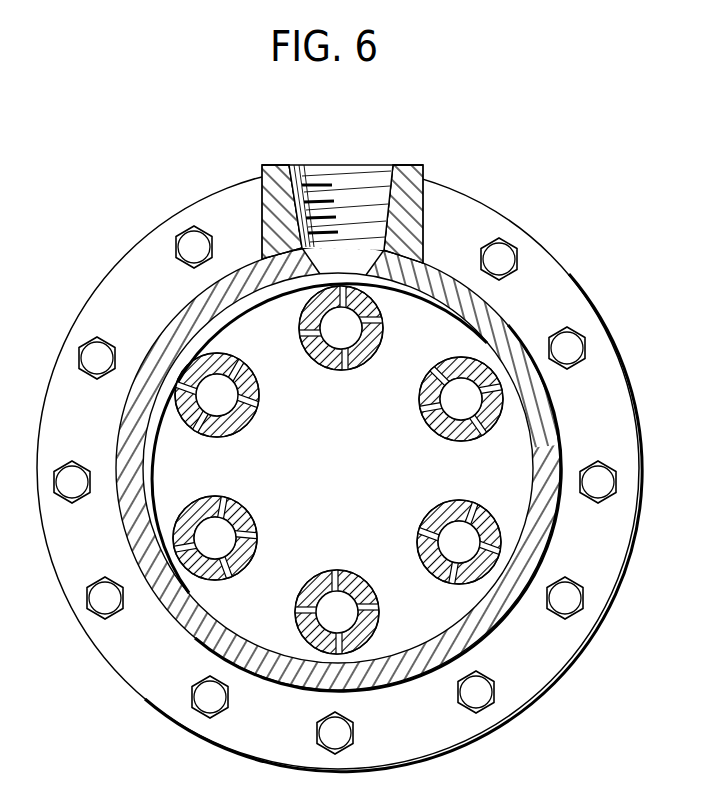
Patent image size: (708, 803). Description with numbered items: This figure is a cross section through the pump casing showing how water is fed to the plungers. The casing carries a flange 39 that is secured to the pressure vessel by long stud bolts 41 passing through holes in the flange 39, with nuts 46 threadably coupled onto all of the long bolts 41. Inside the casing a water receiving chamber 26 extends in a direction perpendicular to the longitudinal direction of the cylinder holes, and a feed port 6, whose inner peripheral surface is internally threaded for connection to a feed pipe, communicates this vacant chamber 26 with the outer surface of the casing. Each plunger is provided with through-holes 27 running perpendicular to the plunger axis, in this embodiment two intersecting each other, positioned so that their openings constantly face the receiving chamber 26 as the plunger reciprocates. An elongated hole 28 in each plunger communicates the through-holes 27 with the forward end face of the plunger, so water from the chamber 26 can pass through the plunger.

The feed port 6 is at (382, 164).
The water receiving chamber 26 is at (340, 498).
The through-hole 27 is at (237, 358).
The elongated hole 28 is at (350, 367).
The flange 39 is at (623, 418).
The long stud bolt 41 is at (183, 242).
The nut 46 is at (88, 344).